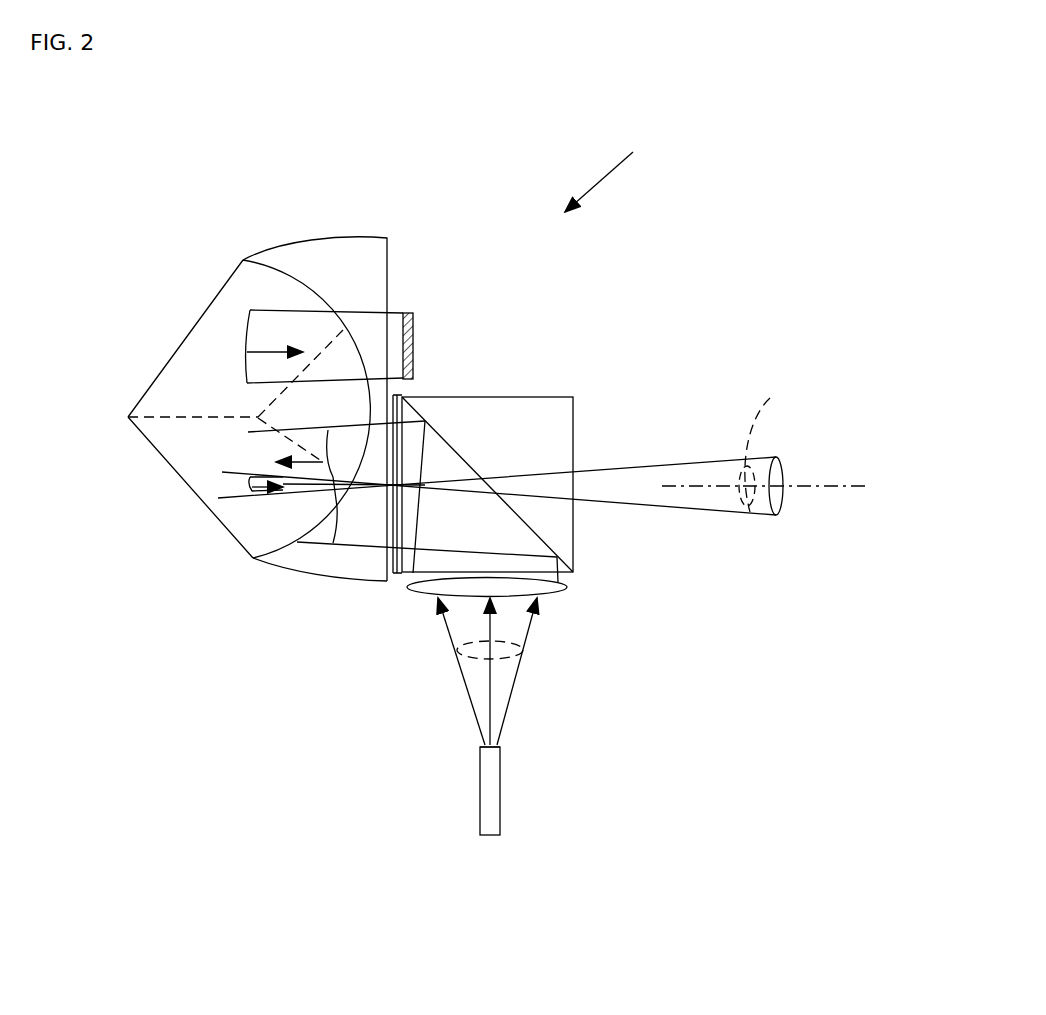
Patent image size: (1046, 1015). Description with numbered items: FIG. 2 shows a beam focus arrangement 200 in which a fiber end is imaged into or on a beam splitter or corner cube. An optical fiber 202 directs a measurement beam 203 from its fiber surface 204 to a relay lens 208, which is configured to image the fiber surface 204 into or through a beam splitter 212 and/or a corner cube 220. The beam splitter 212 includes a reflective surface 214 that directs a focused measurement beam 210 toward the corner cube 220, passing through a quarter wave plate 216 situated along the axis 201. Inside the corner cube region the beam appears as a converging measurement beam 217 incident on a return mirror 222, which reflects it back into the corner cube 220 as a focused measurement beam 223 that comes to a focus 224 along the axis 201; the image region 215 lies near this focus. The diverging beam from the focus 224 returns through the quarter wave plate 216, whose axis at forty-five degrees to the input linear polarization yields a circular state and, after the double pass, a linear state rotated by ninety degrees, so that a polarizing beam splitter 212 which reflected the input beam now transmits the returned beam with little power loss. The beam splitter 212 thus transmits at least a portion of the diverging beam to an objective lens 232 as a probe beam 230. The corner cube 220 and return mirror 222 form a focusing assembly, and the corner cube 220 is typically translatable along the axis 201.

The optical system 200 is at (610, 166).
The axis 201 is at (838, 482).
The optical fiber 202 is at (480, 817).
The measurement beam 203 is at (525, 663).
The fiber surface 204 is at (487, 743).
The relay lens 208 is at (568, 592).
The focused measurement beam 210 is at (565, 578).
The beam splitter 212 is at (559, 395).
The reflective surface 214 is at (448, 440).
The image region 215 is at (328, 436).
The quarter wave plate 216 is at (400, 396).
The converging measurement beam 217 is at (245, 340).
The corner cube 220 is at (358, 236).
The return mirror 222 is at (415, 333).
The focused measurement beam 223 is at (245, 482).
The focus 224 is at (373, 488).
The probe beam 230 is at (772, 451).
The objective lens 232 is at (783, 460).